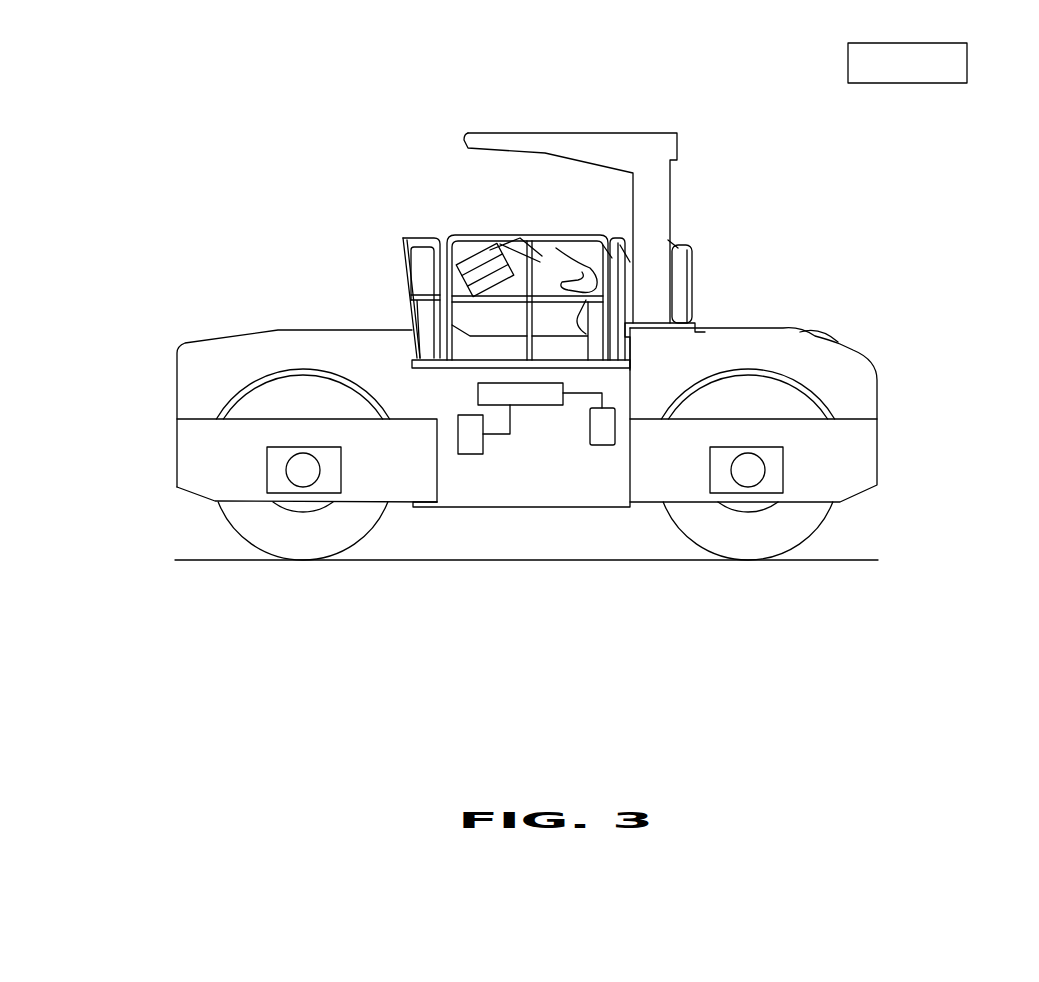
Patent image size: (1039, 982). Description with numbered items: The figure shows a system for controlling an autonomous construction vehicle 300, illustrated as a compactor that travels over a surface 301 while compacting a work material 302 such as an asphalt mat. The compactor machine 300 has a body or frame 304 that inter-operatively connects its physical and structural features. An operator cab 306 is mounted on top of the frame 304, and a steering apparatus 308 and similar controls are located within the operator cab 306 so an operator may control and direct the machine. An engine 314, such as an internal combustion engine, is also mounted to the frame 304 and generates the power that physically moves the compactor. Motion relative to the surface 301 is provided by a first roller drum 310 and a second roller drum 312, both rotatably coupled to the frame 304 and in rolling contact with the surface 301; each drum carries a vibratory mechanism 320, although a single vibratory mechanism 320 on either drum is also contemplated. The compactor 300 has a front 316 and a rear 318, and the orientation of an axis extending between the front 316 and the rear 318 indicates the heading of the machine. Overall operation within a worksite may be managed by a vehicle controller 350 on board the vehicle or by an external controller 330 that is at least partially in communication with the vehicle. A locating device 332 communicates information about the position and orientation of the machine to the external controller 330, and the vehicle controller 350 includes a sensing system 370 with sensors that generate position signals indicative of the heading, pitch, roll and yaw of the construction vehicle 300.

The autonomous construction vehicle 300 is at (284, 165).
The surface 301 is at (836, 558).
The work material 302 is at (203, 586).
The frame 304 is at (563, 498).
The operator cab 306 is at (597, 292).
The steering apparatus 308 is at (452, 274).
The first roller drum 310 is at (246, 534).
The second roller drum 312 is at (689, 529).
The engine 314 is at (346, 328).
The front 316 is at (133, 416).
The rear 318 is at (940, 428).
The vibratory mechanism 320 is at (343, 466).
The external controller 330 is at (847, 70).
The locating device 332 is at (588, 428).
The vehicle controller 350 is at (477, 392).
The sensing system 370 is at (475, 455).